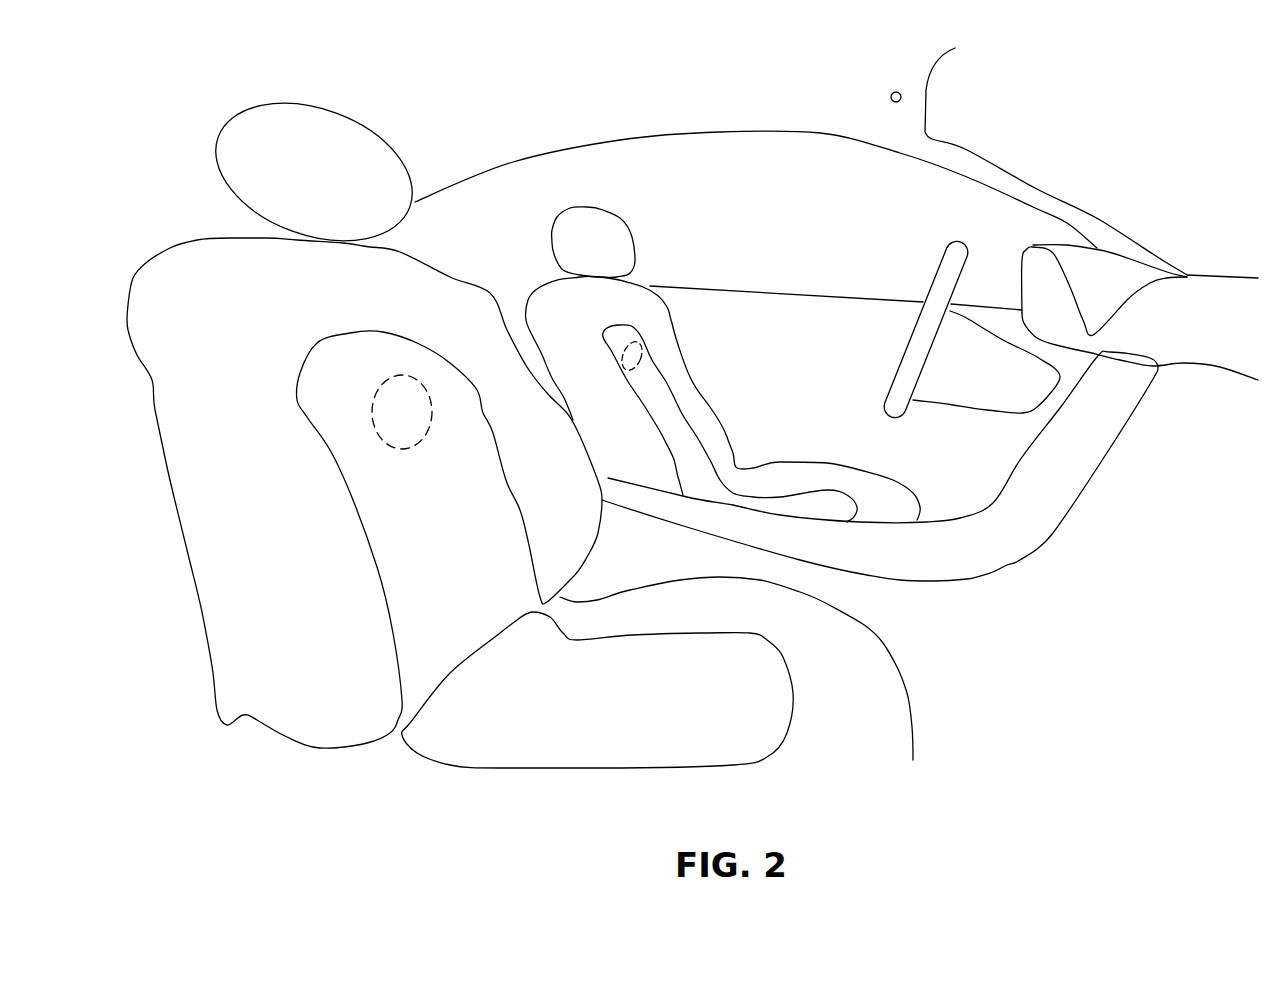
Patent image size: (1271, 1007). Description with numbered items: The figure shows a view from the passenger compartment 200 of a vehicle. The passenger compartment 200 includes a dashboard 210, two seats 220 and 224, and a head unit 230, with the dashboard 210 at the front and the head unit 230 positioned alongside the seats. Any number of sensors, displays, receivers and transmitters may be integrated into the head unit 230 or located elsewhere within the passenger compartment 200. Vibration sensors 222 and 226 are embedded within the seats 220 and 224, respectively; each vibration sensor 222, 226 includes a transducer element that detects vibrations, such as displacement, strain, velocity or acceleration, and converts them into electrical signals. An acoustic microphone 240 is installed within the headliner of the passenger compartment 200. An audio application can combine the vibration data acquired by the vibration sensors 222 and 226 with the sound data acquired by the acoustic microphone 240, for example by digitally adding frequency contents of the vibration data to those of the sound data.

The passenger compartment 200 is at (698, 57).
The dashboard 210 is at (1037, 257).
The seat 220 is at (425, 257).
The vibration sensor 222 is at (387, 385).
The seat 224 is at (645, 287).
The vibration sensor 226 is at (640, 353).
The head unit 230 is at (1078, 465).
The acoustic microphone 240 is at (891, 92).